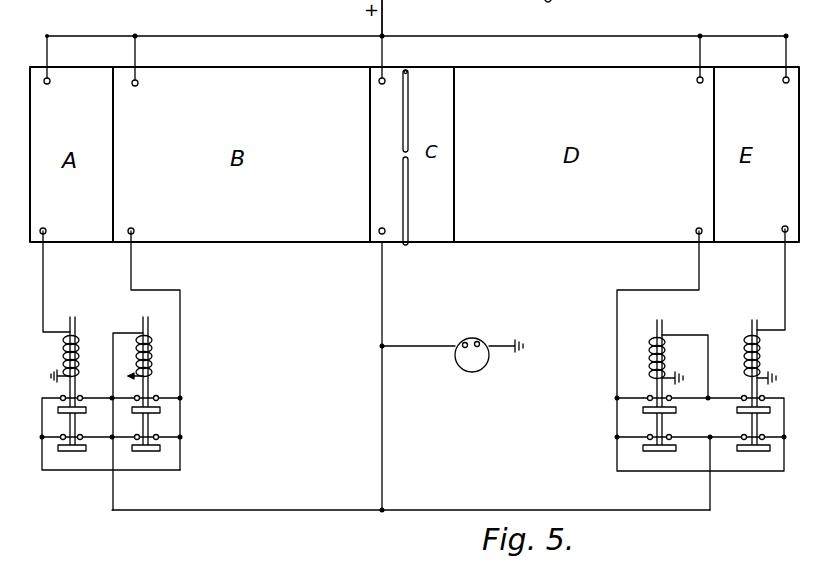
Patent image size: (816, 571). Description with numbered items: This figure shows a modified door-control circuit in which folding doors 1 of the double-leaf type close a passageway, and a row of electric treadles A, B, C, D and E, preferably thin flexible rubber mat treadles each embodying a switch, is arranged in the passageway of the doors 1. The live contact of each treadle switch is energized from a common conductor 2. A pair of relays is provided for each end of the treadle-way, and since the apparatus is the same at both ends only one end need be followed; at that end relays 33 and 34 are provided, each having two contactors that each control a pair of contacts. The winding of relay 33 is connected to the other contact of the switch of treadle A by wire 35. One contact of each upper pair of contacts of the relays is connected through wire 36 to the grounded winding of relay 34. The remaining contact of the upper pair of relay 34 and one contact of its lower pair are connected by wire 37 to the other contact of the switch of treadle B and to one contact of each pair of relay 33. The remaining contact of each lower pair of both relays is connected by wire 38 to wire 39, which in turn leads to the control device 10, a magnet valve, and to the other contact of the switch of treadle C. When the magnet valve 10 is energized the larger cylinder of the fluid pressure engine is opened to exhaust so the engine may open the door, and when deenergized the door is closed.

The door 1 is at (420, 179).
The common conductor 2 is at (384, 14).
The control device 10 is at (472, 365).
The relay 33 is at (104, 364).
The relay 34 is at (175, 362).
The wire 35 is at (44, 279).
The wire 36 is at (122, 333).
The wire 37 is at (181, 345).
The wire 38 is at (272, 509).
The wire 39 is at (383, 393).